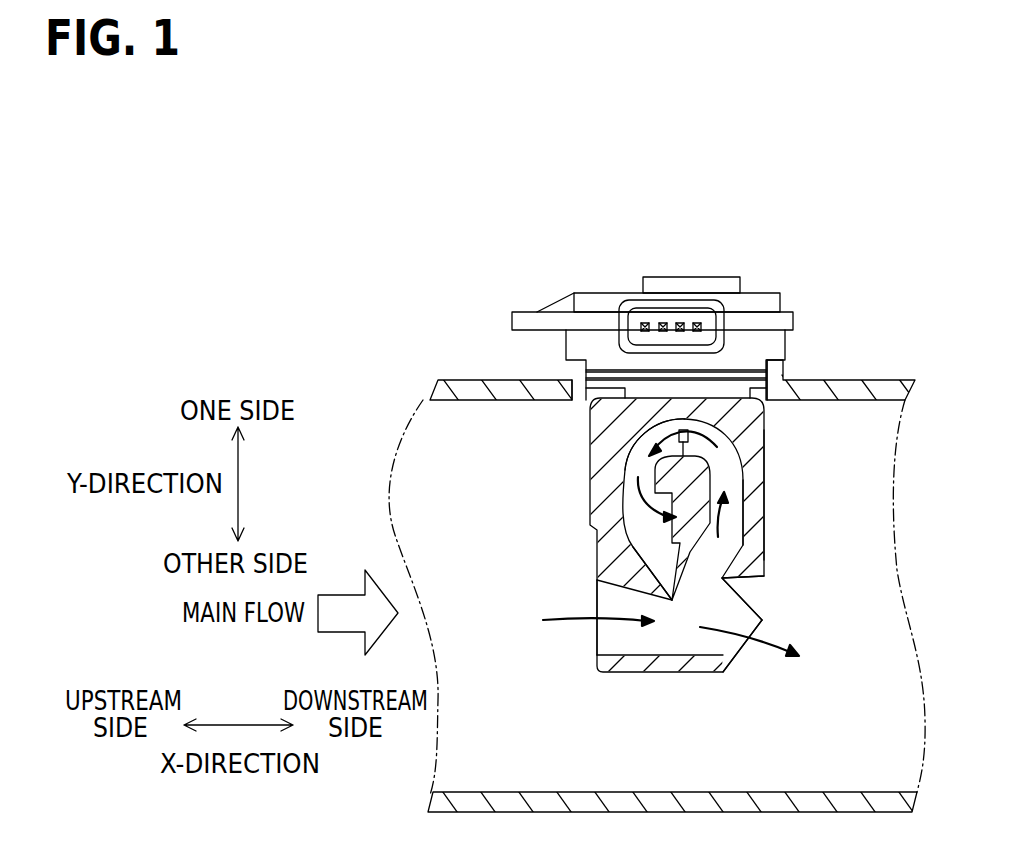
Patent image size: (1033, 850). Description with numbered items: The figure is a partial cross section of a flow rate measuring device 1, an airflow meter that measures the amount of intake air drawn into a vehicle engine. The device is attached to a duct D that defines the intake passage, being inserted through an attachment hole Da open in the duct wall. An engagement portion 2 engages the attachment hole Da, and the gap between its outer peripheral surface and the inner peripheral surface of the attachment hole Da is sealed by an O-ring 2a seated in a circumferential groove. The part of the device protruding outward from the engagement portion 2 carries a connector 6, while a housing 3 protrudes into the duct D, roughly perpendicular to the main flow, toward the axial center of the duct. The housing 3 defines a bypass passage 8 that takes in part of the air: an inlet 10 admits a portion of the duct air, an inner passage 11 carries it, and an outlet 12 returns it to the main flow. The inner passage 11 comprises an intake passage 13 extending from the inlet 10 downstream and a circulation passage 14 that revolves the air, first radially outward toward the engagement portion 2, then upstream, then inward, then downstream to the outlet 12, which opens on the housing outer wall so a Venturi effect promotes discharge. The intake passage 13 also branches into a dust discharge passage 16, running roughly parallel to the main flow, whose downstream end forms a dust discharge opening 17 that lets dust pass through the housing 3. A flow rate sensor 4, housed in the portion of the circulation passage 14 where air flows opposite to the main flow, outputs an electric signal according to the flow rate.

The flow rate measuring device 1 is at (675, 458).
The engagement portion 2 is at (597, 385).
The O-ring 2a is at (590, 373).
The housing 3 is at (764, 518).
The flow rate sensor 4 is at (746, 445).
The connector 6 is at (595, 297).
The bypass passage 8 is at (748, 540).
The inlet 10 is at (595, 641).
The inner passage 11 is at (622, 496).
The outlet 12 is at (630, 544).
The intake passage 13 is at (608, 595).
The circulation passage 14 is at (745, 472).
The dust discharge passage 16 is at (746, 595).
The dust discharge opening 17 is at (729, 663).
The duct D is at (884, 390).
The attachment hole Da is at (762, 360).